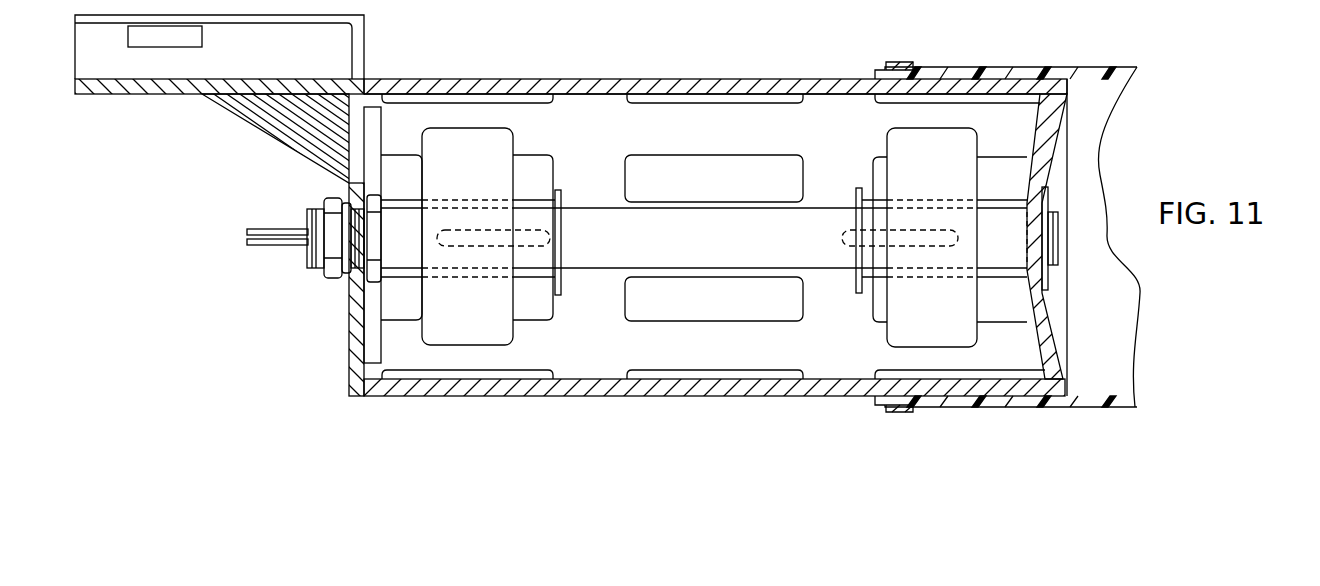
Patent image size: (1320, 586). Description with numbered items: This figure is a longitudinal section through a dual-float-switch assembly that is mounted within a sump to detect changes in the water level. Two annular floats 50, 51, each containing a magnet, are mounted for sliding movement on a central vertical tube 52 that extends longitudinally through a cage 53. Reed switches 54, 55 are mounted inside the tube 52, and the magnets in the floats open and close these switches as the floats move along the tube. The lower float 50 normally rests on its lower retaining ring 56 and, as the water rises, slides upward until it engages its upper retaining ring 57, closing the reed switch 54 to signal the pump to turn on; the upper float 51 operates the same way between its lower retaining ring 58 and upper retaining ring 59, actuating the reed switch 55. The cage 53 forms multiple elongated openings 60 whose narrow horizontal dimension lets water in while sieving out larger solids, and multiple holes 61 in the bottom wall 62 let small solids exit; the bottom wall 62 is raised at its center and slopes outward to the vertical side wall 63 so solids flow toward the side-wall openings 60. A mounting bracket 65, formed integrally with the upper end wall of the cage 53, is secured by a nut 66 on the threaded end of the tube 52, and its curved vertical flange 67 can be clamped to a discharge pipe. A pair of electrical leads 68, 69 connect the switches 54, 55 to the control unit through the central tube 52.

The lower float 50 is at (887, 150).
The upper float 51 is at (510, 148).
The central vertical tube 52 is at (619, 262).
The cage 53 is at (641, 77).
The reed switch 54 is at (852, 245).
The reed switch 55 is at (543, 240).
The lower retaining ring 56 is at (1052, 280).
The upper retaining ring 57 is at (860, 294).
The lower retaining ring 58 is at (562, 200).
The upper retaining ring 59 is at (373, 268).
The elongated openings 60 is at (648, 157).
The holes 61 is at (1050, 138).
The bottom wall 62 is at (1060, 90).
The vertical side wall 63 is at (703, 143).
The mounting bracket 65 is at (347, 15).
The nut 66 is at (333, 208).
The vertical flange 67 is at (140, 79).
The electrical lead 68 is at (262, 229).
The electrical lead 69 is at (262, 246).